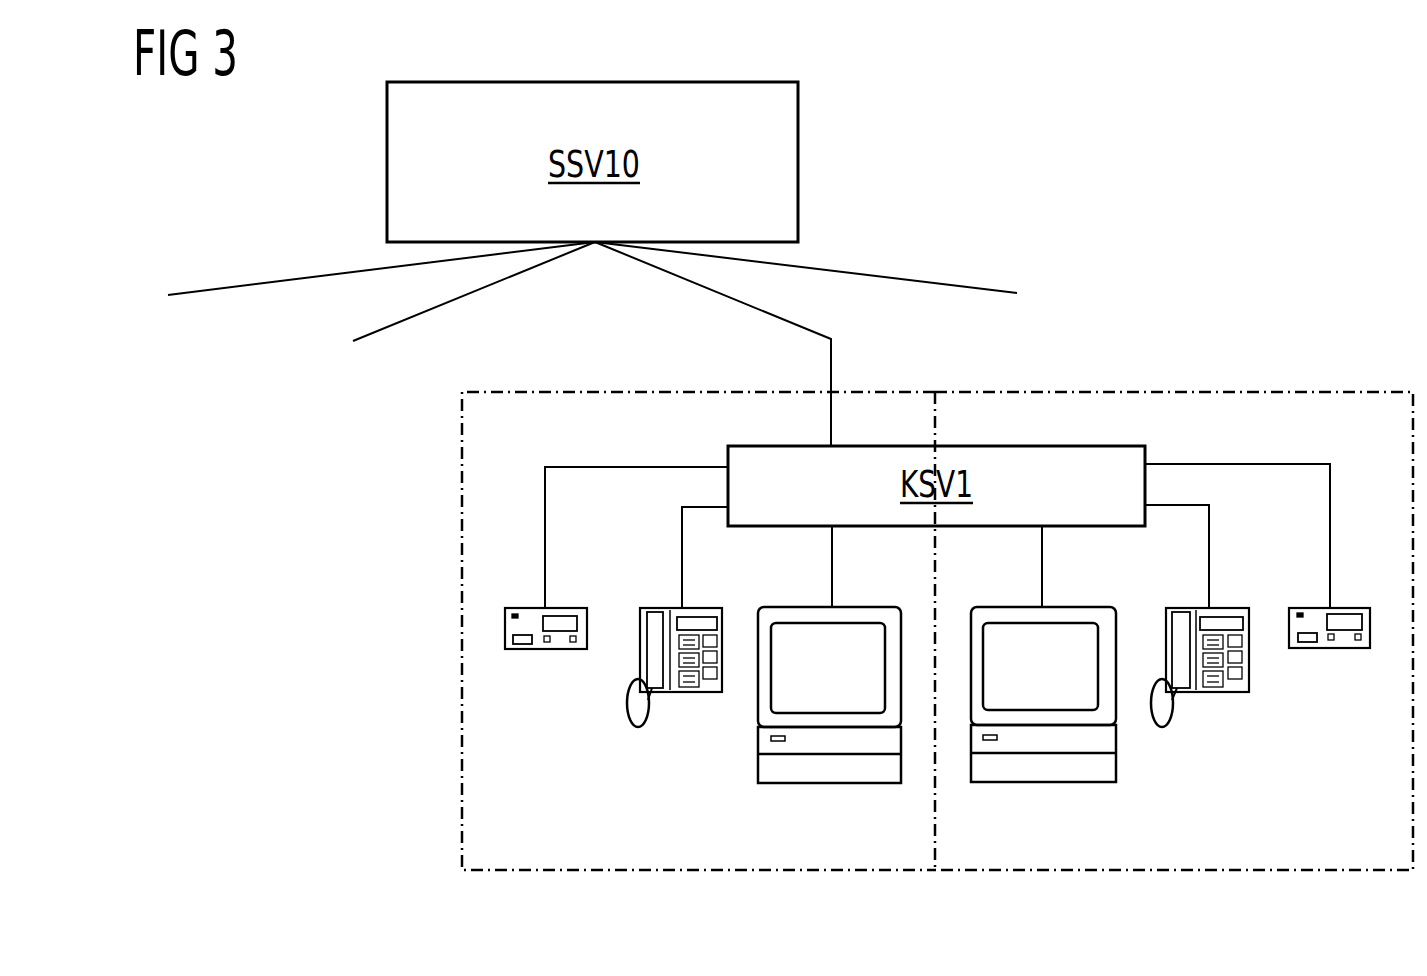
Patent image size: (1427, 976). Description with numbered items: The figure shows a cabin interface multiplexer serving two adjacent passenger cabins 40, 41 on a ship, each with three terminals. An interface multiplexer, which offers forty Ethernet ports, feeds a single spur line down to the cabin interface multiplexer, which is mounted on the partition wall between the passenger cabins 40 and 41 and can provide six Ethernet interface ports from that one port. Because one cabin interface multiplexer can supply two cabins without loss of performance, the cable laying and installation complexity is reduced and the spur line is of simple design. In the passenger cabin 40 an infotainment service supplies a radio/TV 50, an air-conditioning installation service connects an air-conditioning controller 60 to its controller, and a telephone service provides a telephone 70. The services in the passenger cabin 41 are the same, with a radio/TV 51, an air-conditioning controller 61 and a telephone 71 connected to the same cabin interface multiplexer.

The passenger cabin 40 is at (710, 870).
The passenger cabin 41 is at (1222, 870).
The radio/TV 50 is at (829, 783).
The radio/TV 51 is at (1041, 782).
The air-conditioning controller 60 is at (545, 650).
The air-conditioning controller 61 is at (1325, 649).
The telephone 70 is at (681, 692).
The telephone 71 is at (1212, 692).